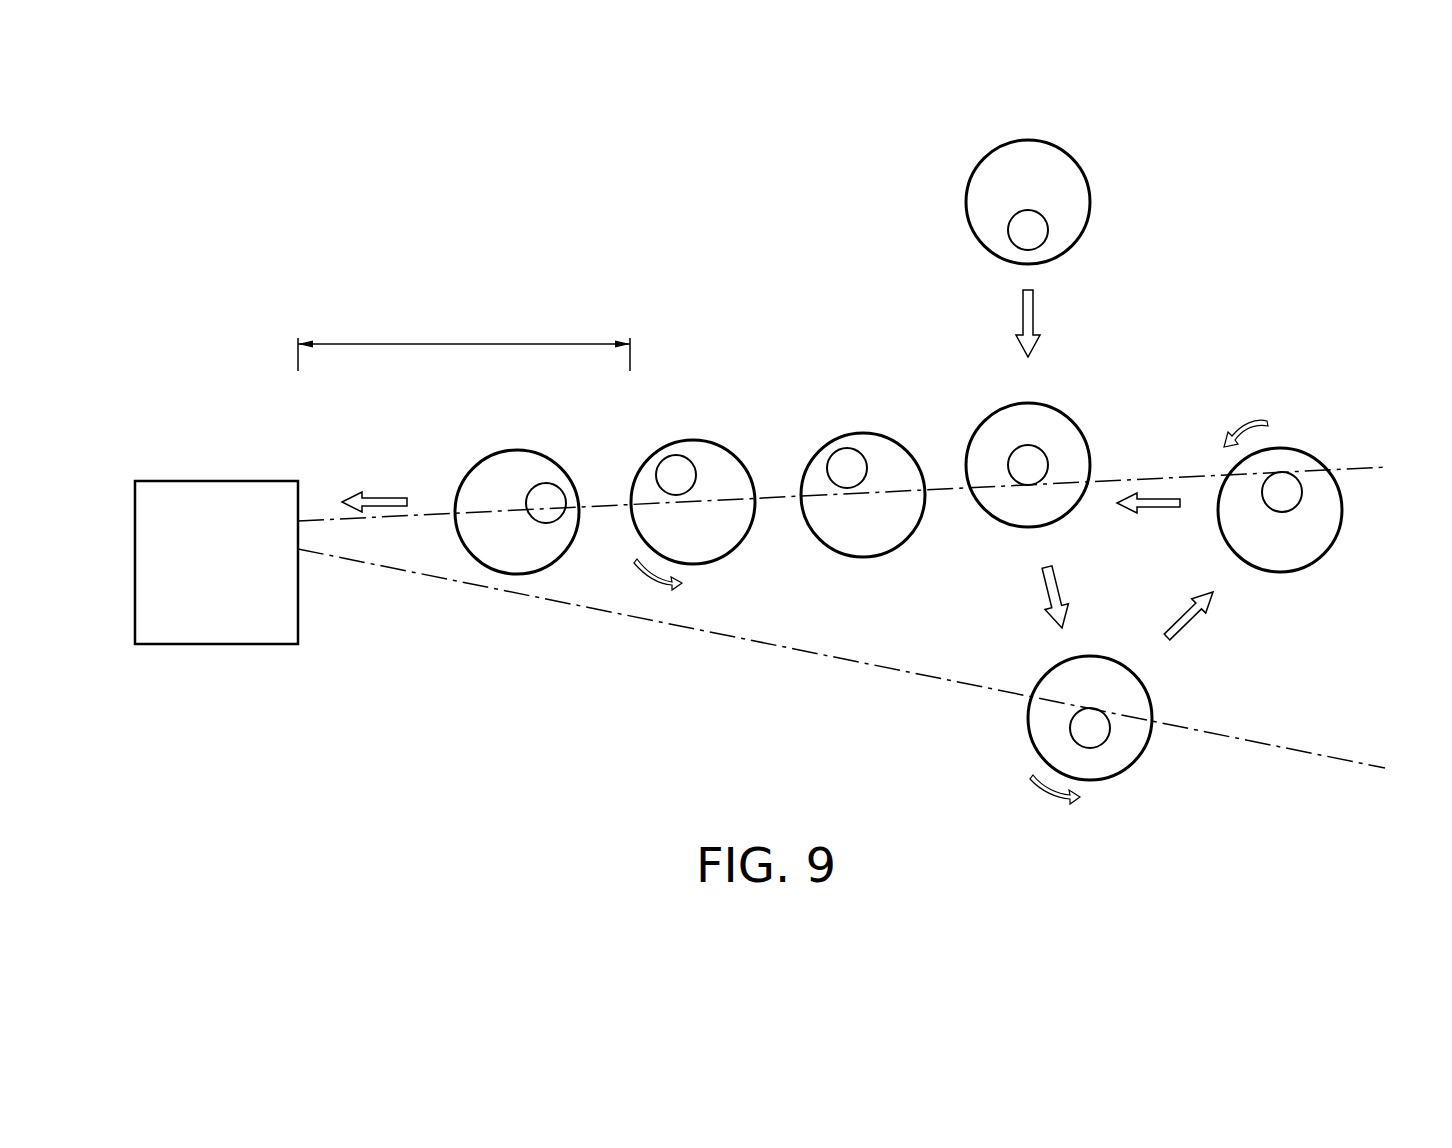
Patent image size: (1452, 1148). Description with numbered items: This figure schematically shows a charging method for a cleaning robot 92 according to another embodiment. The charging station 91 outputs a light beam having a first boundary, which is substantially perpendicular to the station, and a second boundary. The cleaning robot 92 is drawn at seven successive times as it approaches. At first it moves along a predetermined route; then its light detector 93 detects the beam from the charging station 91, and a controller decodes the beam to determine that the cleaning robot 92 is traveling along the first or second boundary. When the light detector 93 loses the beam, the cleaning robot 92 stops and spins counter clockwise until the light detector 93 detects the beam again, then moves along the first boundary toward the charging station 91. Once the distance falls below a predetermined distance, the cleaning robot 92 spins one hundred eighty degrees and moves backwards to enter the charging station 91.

The charging station 91 is at (202, 609).
The cleaning robot 92 is at (1090, 213).
The light detector 93 is at (1013, 218).